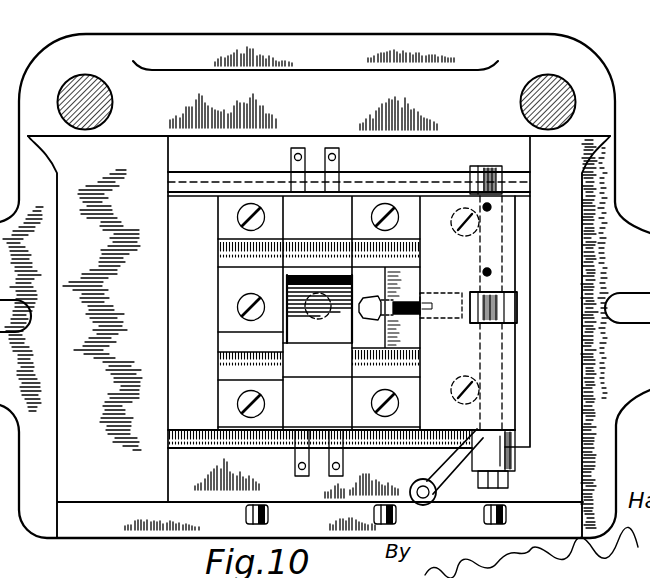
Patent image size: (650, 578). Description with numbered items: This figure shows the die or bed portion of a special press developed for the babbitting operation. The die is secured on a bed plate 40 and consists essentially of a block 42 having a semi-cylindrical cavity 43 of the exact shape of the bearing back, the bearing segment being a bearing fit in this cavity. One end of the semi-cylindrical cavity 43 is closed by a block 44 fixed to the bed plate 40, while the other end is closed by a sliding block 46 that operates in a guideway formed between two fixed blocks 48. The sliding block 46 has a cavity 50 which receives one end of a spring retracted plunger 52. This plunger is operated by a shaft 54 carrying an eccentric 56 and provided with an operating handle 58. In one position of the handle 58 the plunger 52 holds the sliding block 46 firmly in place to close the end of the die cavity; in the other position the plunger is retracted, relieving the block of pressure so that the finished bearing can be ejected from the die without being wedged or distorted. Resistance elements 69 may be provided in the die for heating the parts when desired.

The bed plate 40 is at (118, 522).
The block 42 is at (285, 268).
The semi-cylindrical cavity 43 is at (287, 333).
The block 44 is at (227, 348).
The sliding block 46 is at (373, 289).
The fixed blocks 48 is at (405, 207).
The cavity 50 is at (384, 318).
The spring retracted plunger 52 is at (406, 317).
The shaft 54 is at (507, 400).
The eccentric 56 is at (515, 310).
The operating handle 58 is at (428, 506).
The resistance elements 69 is at (332, 148).